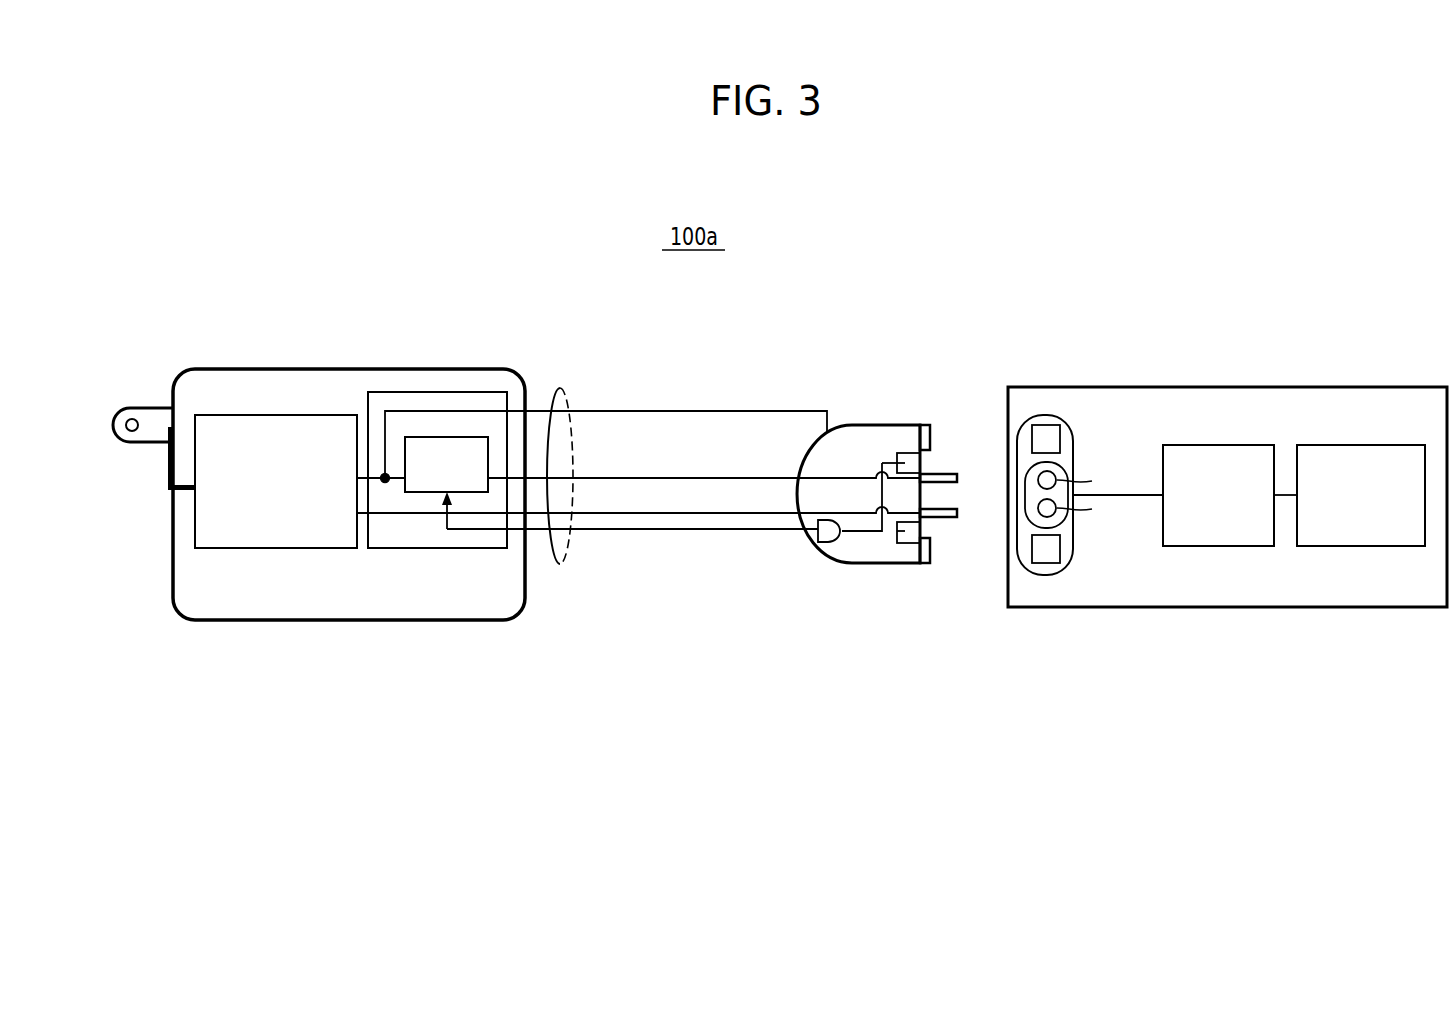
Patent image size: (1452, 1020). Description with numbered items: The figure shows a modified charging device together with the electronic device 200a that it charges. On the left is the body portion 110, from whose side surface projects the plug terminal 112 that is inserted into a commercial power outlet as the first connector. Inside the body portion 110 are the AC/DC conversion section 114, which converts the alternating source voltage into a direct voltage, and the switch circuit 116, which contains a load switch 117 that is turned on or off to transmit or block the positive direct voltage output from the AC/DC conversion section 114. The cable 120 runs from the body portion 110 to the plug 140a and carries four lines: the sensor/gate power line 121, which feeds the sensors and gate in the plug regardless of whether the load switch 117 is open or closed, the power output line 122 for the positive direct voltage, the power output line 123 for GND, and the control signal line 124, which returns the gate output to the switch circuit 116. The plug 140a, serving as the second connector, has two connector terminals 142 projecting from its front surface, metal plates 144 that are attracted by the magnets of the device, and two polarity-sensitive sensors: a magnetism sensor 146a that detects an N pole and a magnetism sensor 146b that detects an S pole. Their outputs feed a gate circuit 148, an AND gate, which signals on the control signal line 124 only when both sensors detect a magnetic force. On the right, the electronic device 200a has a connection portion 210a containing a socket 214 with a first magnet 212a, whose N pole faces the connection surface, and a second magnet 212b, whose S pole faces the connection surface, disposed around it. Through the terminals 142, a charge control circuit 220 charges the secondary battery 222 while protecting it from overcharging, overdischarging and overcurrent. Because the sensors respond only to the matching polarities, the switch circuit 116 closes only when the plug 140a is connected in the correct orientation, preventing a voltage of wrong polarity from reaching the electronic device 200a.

The body portion 110 is at (380, 368).
The plug terminal 112 is at (140, 447).
The AC/DC conversion section 114 is at (275, 549).
The switch circuit 116 is at (440, 549).
The load switch 117 is at (448, 436).
The cable 120 is at (560, 564).
The sensor/gate power line 121 is at (690, 411).
The power output line for the direct voltage (positive) 122 is at (710, 478).
The power output line for GND 123 is at (768, 513).
The control signal line 124 is at (731, 530).
The plug 140a is at (848, 413).
The connector terminals 142 is at (944, 473).
The metal plates 144 is at (925, 428).
The magnetism sensor 146a is at (906, 458).
The magnetism sensor 146b is at (906, 540).
The gate circuit 148 is at (833, 541).
The electronic device 200a is at (1268, 387).
The connection portion 210a is at (1078, 586).
The first magnet 212a is at (1045, 424).
The second magnet 212b is at (1047, 565).
The socket 214 is at (1062, 466).
The charge control circuit 220 is at (1218, 547).
The secondary battery 222 is at (1362, 547).